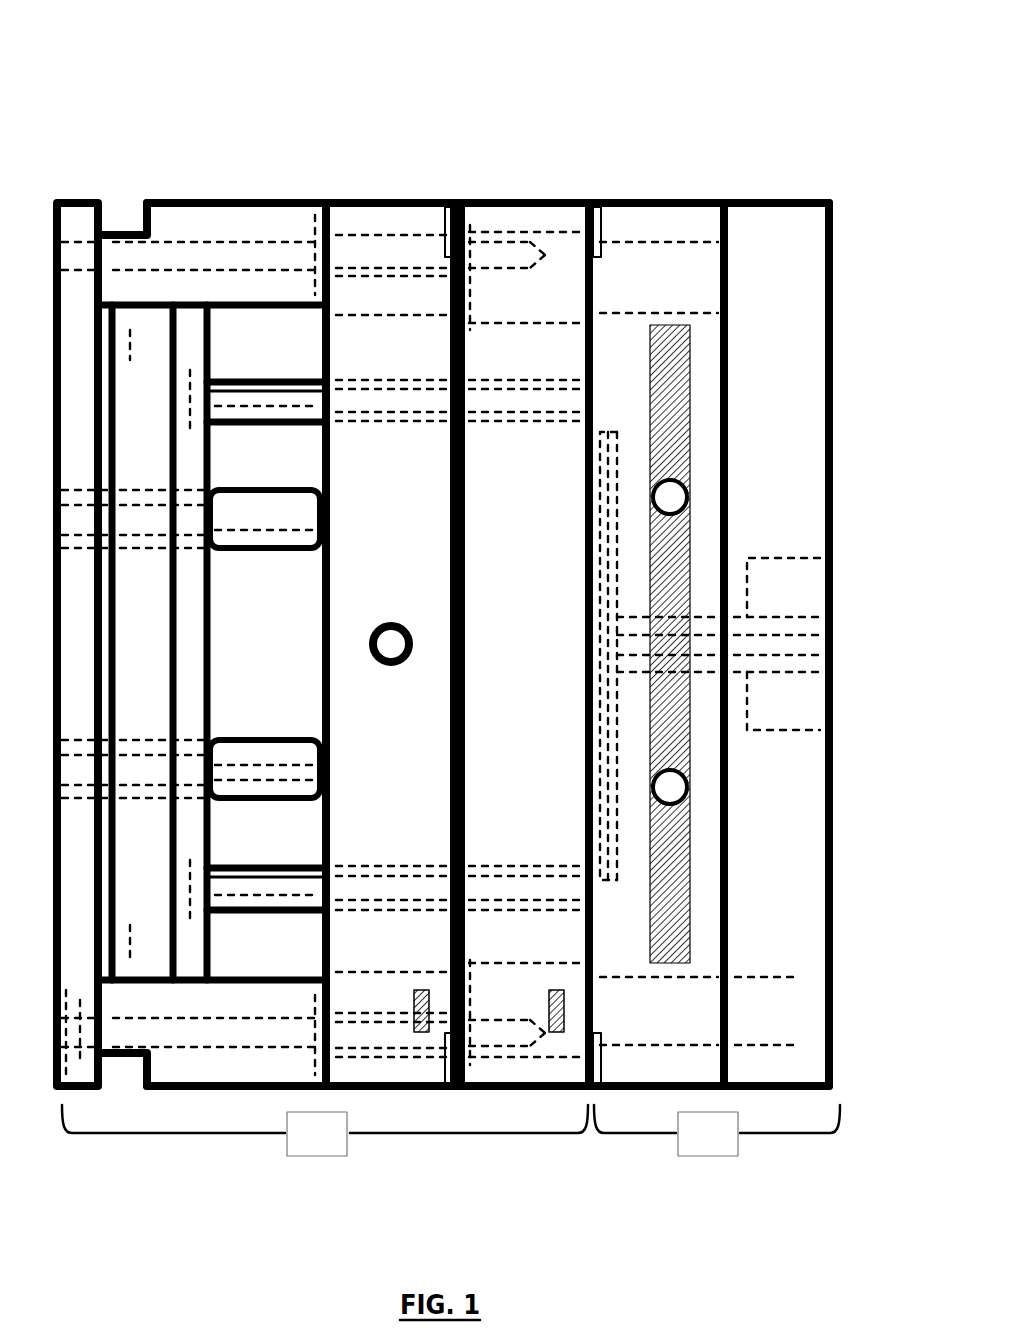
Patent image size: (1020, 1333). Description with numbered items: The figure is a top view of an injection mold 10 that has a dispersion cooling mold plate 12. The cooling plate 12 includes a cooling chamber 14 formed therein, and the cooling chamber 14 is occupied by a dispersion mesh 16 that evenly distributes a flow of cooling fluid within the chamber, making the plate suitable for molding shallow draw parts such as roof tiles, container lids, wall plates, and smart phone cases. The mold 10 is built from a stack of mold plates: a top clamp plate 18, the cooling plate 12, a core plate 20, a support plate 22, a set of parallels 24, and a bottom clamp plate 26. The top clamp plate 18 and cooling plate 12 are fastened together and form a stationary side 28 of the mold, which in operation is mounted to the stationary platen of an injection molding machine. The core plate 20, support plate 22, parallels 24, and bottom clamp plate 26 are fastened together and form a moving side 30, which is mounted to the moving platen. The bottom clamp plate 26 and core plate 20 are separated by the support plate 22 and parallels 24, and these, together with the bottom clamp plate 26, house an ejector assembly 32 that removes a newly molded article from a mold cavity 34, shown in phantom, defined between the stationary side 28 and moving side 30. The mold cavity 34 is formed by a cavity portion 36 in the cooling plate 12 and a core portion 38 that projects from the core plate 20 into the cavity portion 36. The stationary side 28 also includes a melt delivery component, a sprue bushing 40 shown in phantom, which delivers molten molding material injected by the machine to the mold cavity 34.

The injection mold 10 is at (826, 88).
The dispersion cooling mold plate 12 is at (627, 199).
The cooling chamber 14 is at (652, 352).
The dispersion mesh 16 is at (674, 380).
The top clamp plate 18 is at (783, 199).
The core plate 20 is at (548, 199).
The support plate 22 is at (415, 199).
The set of parallels 24 is at (268, 199).
The bottom clamp plate 26 is at (78, 199).
The stationary side 28 is at (717, 1130).
The moving side 30 is at (325, 1130).
The ejector assembly 32 is at (229, 642).
The mold cavity 34 is at (610, 868).
The cavity portion 36 is at (612, 828).
The core portion 38 is at (610, 808).
The sprue bushing 40 is at (780, 633).